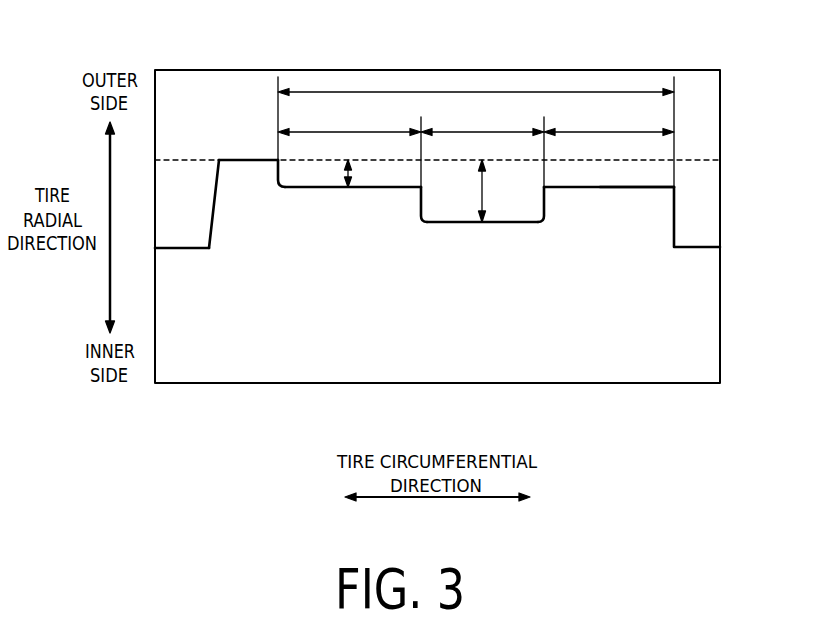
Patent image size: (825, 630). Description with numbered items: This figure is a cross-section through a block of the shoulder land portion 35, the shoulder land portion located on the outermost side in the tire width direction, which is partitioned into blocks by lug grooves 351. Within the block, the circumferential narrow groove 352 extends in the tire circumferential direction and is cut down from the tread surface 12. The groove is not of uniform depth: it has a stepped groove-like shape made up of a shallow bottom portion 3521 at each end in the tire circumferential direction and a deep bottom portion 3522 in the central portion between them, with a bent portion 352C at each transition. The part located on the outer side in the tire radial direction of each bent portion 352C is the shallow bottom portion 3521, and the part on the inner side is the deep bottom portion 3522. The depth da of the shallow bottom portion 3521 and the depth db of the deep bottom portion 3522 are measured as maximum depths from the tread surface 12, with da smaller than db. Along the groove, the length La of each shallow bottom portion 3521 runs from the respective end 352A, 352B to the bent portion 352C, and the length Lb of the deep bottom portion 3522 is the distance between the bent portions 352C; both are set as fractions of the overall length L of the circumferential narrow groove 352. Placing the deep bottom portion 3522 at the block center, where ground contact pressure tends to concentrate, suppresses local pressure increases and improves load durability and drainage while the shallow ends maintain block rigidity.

The tread surface 12 is at (228, 159).
The shoulder land portion 35 is at (263, 142).
The lug groove 351 is at (202, 248).
The circumferential narrow groove 352 is at (607, 78).
The end of circumferential narrow groove 352A is at (680, 187).
The end of circumferential narrow groove 352B is at (279, 183).
The bent portion 352C is at (422, 188).
The shallow bottom portion 3521 is at (337, 187).
The deep bottom portion 3522 is at (508, 222).
The length of circumferential narrow groove L is at (476, 92).
The length of shallow bottom portion La is at (476, 122).
The length of deep bottom portion Lb is at (482, 148).
The depth of shallow bottom portion da is at (361, 174).
The depth of deep bottom portion db is at (496, 191).